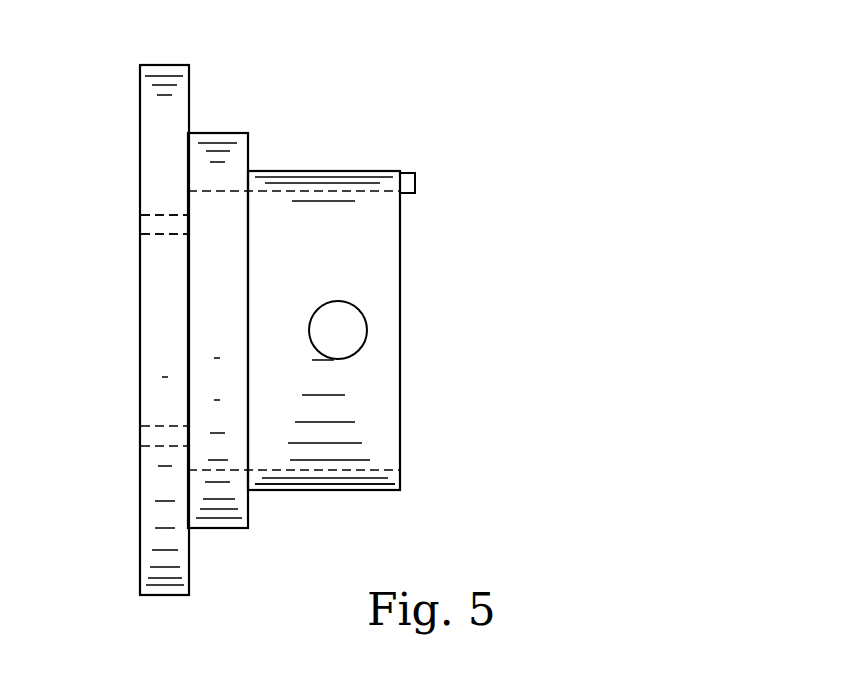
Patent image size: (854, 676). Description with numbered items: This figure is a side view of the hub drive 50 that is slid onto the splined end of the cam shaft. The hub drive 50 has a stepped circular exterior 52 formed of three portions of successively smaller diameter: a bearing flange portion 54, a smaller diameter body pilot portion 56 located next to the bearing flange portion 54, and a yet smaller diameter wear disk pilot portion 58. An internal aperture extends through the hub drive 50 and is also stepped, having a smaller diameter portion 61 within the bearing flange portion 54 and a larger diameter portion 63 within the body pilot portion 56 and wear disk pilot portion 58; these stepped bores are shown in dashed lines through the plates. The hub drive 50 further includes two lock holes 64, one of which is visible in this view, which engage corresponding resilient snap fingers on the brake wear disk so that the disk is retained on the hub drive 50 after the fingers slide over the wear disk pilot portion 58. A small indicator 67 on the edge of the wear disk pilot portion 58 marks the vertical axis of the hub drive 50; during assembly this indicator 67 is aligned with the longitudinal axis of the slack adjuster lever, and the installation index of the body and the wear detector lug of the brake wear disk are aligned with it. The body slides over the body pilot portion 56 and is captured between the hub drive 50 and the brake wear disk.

The hub drive 50 is at (373, 116).
The stepped circular exterior 52 is at (351, 492).
The bearing flange portion 54 is at (165, 597).
The body pilot portion 56 is at (215, 132).
The wear disk pilot portion 58 is at (313, 171).
The smaller diameter portion 61 is at (162, 236).
The larger diameter portion 63 is at (372, 193).
The lock holes 64 is at (352, 316).
The indicator 67 is at (415, 183).